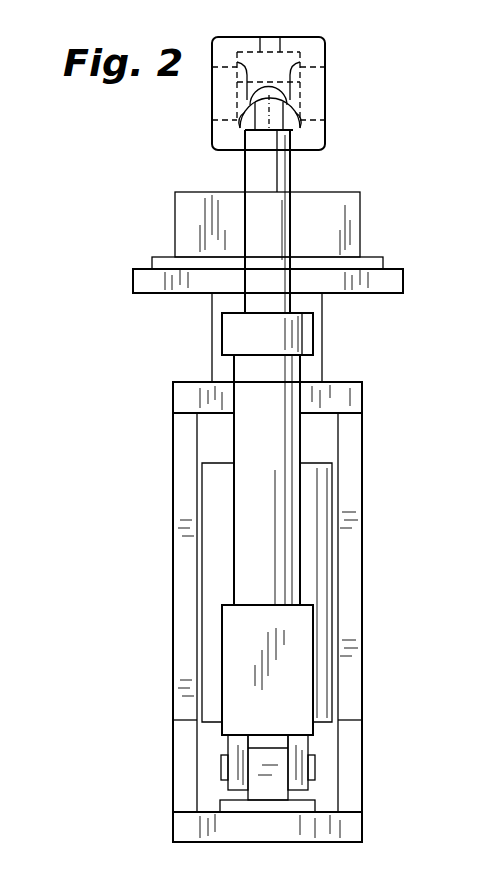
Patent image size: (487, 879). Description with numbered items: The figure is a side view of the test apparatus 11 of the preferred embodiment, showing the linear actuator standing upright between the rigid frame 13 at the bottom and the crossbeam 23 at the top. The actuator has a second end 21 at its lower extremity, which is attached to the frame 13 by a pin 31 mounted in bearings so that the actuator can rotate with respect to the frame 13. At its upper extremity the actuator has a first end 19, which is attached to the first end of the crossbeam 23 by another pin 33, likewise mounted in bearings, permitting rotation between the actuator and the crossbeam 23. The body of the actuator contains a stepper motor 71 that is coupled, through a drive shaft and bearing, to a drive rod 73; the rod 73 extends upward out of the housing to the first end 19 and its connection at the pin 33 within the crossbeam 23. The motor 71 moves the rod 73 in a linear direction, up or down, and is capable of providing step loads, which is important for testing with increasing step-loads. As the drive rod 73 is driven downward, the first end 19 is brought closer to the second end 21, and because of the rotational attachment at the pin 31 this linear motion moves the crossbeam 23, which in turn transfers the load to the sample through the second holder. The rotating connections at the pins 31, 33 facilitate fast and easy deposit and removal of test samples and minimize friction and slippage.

The test apparatus 11 is at (156, 352).
The rigid frame 13 is at (352, 828).
The first end of actuator 19 is at (282, 140).
The second end of actuator 21 is at (297, 747).
The crossbeam 23 is at (307, 37).
The pin 31 is at (310, 770).
The pin 33 is at (293, 92).
The stepper motor 71 is at (290, 435).
The drive rod 73 is at (282, 218).